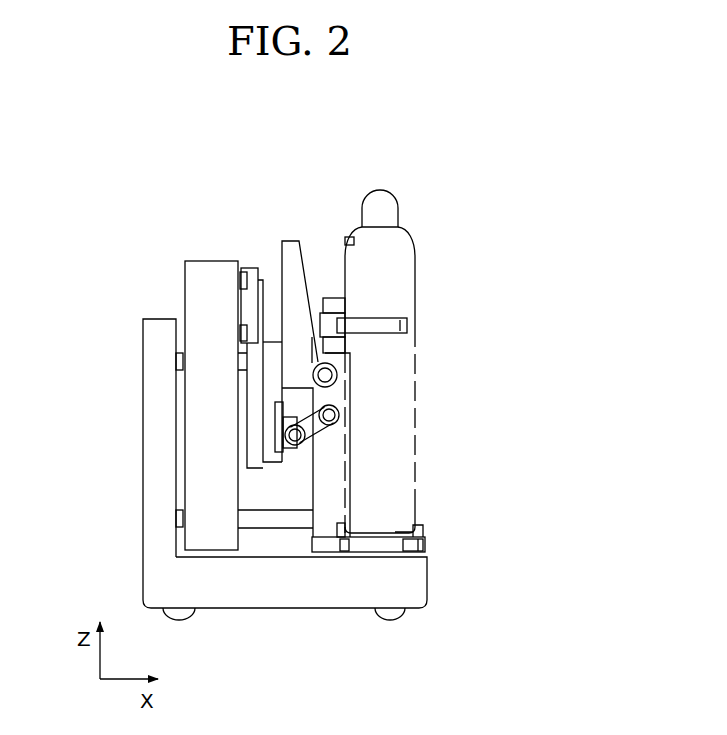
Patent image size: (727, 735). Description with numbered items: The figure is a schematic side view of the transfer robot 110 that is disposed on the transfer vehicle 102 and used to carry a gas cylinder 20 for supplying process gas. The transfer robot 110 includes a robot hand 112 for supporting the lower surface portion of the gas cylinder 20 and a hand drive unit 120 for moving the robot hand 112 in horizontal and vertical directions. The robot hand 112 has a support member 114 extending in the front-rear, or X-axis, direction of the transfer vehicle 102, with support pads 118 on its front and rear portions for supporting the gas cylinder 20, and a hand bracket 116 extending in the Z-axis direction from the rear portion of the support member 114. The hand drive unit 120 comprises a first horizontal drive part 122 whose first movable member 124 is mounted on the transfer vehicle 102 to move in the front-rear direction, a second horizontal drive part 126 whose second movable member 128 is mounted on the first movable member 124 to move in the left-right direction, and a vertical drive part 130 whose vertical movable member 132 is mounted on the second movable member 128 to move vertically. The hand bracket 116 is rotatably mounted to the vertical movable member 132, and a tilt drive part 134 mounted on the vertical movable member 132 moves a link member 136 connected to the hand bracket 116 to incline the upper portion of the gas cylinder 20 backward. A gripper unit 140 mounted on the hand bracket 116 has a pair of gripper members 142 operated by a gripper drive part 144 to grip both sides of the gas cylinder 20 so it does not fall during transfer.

The transfer vehicle 102 is at (283, 600).
The transfer robot 110 is at (437, 220).
The robot hand 112 is at (433, 523).
The support member 114 is at (367, 552).
The hand bracket 116 is at (314, 478).
The support pads 118 is at (343, 540).
The hand drive unit 120 is at (158, 243).
The first horizontal drive part 122 is at (178, 275).
The first movable member 124 is at (188, 297).
The second horizontal drive part 126 is at (247, 262).
The second movable member 128 is at (253, 270).
The vertical drive part 130 is at (260, 378).
The vertical movable member 132 is at (265, 392).
The tilt drive part 134 is at (267, 430).
The link member 136 is at (290, 433).
The gripper unit 140 is at (418, 320).
The gripper members 142 is at (405, 328).
The gripper drive part 144 is at (333, 317).
The gas cylinder 20 is at (410, 278).